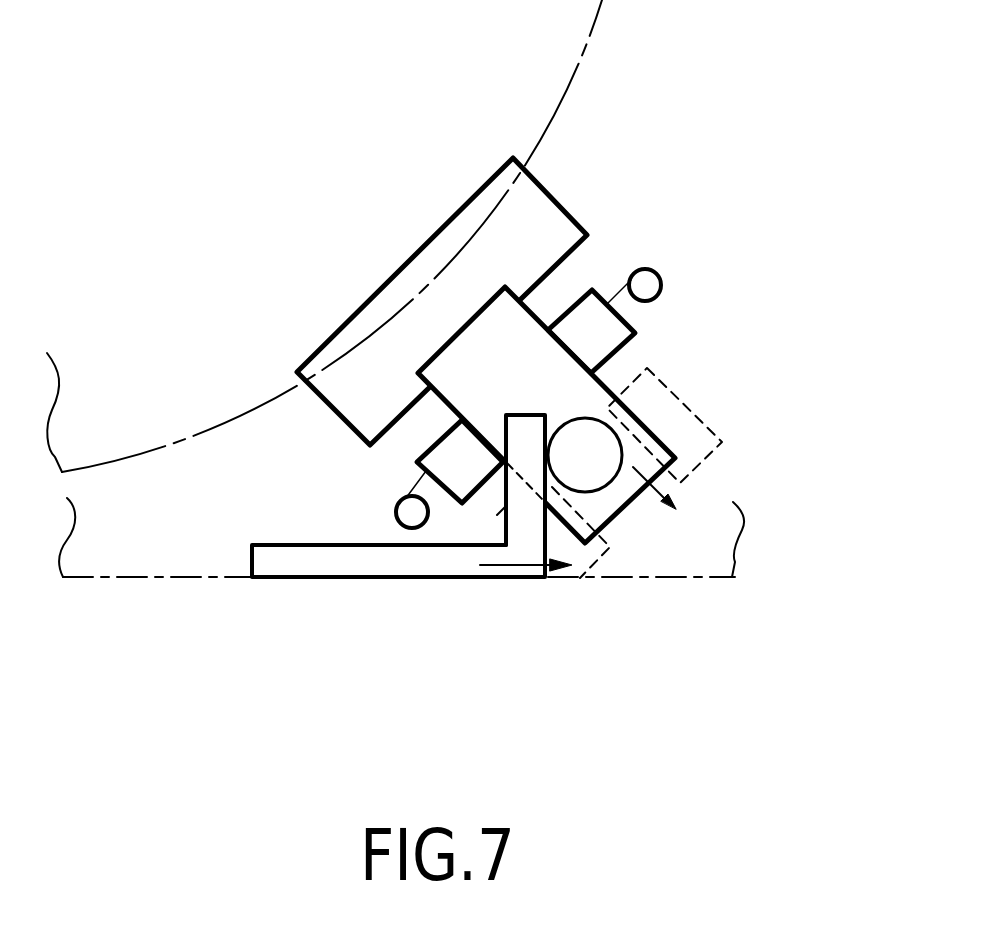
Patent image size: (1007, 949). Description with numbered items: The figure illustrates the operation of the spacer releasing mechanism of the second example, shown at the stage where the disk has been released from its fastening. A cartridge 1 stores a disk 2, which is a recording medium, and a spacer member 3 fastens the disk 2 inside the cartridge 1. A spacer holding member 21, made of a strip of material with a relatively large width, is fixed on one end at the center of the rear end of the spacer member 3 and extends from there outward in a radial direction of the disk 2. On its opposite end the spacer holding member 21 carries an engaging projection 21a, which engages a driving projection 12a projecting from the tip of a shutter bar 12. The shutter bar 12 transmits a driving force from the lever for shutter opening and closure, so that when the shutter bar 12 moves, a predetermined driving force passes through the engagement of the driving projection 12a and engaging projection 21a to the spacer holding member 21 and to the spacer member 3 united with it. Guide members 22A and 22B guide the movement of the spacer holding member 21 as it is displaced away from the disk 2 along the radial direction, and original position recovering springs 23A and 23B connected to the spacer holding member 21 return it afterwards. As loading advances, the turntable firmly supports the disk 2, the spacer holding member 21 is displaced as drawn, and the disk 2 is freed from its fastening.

The cartridge 1 is at (112, 578).
The disk 2 is at (593, 22).
The spacer member 3 is at (567, 208).
The shutter bar 12 is at (400, 560).
The driving projection 12a is at (517, 528).
The spacer holding member 21 is at (583, 385).
The engaging projection 21a is at (598, 458).
The guide member 22A is at (685, 403).
The guide member 22B is at (607, 548).
The original position recovering spring 23A is at (613, 298).
The original position recovering spring 23B is at (425, 478).